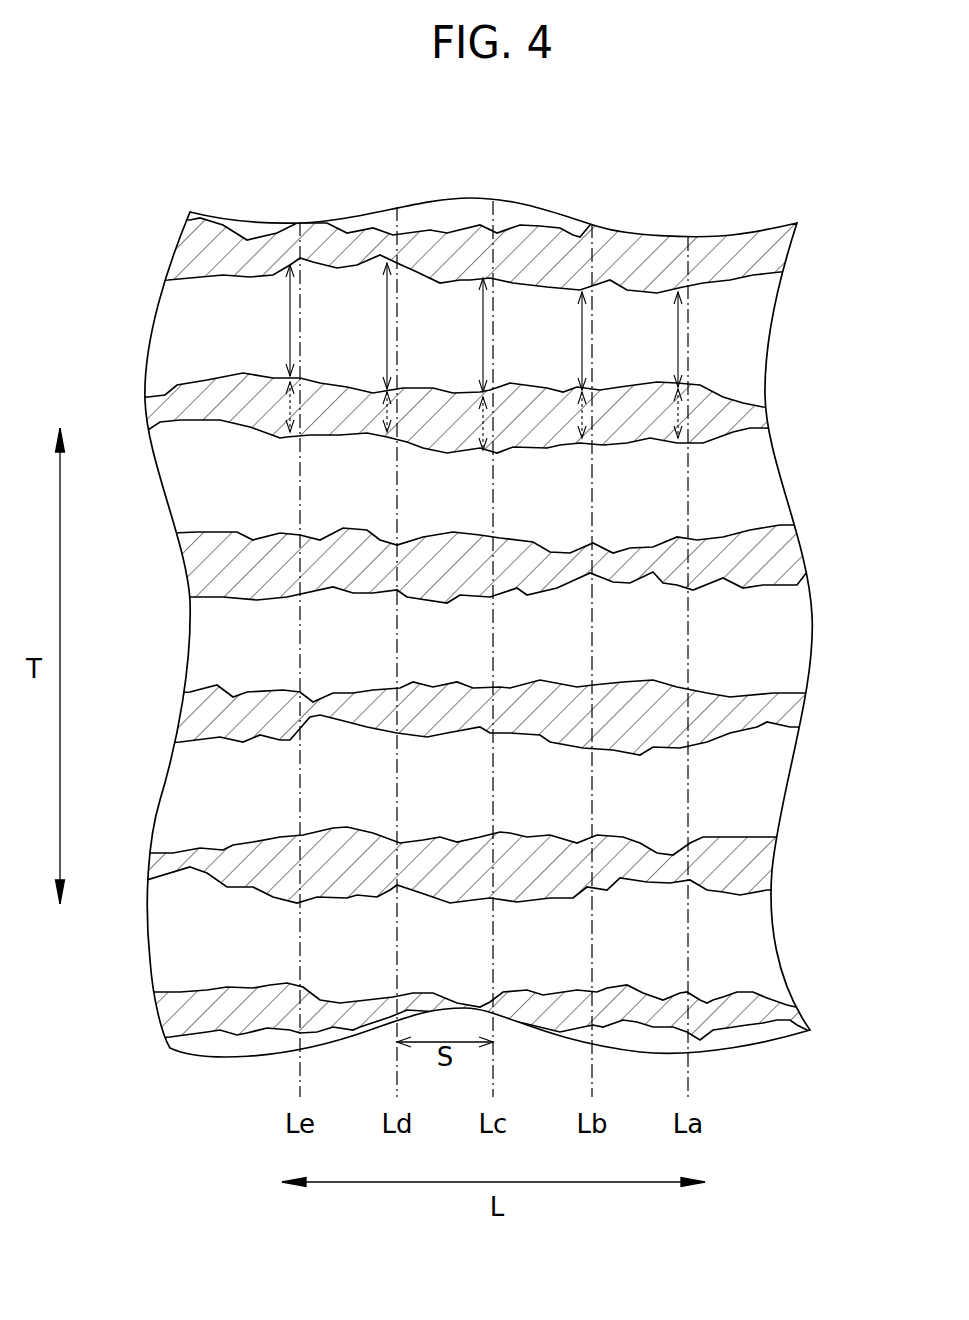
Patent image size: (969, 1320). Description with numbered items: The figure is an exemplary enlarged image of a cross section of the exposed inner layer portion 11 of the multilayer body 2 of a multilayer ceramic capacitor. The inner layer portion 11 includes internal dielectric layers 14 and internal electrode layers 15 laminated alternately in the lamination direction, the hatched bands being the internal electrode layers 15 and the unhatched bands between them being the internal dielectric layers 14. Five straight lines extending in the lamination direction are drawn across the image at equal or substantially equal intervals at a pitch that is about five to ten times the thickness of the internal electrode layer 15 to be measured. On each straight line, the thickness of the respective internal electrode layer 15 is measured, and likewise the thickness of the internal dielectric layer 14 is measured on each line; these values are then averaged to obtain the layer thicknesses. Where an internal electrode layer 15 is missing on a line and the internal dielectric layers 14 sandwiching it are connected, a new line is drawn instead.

The multilayer body 2 is at (541, 168).
The inner layer portion 11 is at (838, 461).
The internal dielectric layer 14 is at (745, 327).
The internal electrode layer 15 is at (777, 249).